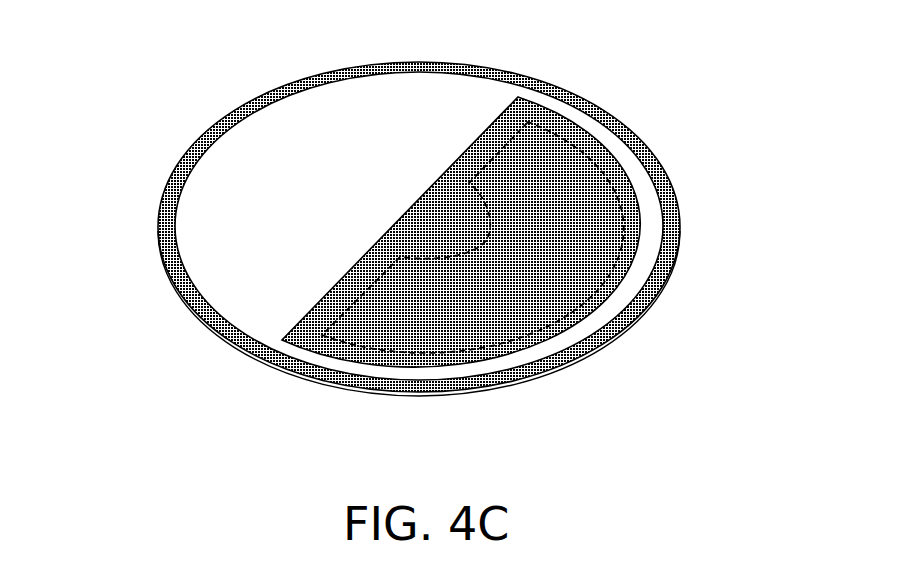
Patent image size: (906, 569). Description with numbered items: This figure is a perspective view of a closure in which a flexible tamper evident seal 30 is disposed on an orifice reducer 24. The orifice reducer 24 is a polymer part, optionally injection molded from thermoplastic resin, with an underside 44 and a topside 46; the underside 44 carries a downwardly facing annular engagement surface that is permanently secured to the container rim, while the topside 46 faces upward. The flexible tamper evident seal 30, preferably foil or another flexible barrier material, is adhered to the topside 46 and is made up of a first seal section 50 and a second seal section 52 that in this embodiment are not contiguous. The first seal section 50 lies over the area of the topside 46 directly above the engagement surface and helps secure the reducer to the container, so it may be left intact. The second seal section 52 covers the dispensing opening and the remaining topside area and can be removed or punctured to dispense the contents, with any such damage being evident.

The orifice reducer 24 is at (122, 220).
The flexible tamper evident seal 30 is at (447, 66).
The underside 44 is at (443, 398).
The topside 46 is at (323, 140).
The first seal section 50 is at (612, 125).
The second seal section 52 is at (617, 177).